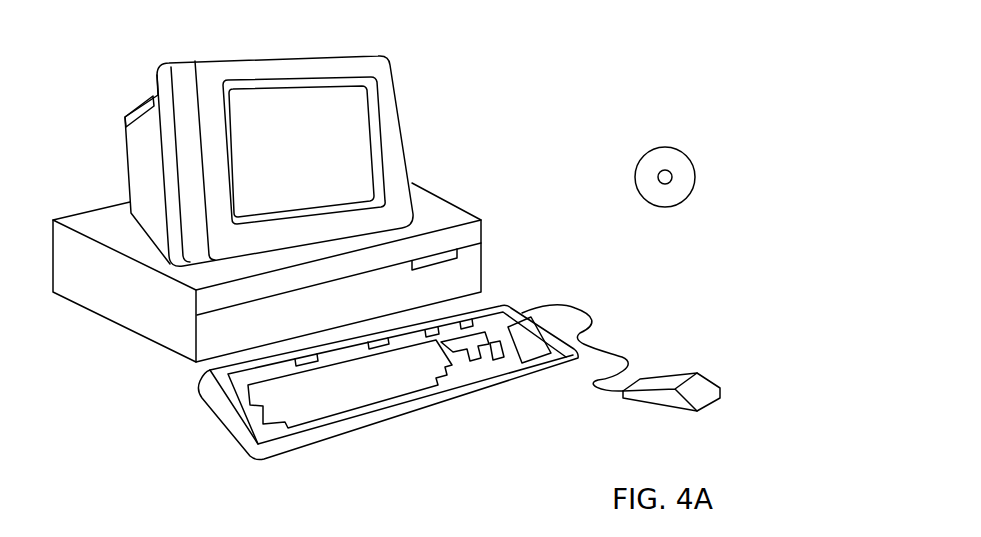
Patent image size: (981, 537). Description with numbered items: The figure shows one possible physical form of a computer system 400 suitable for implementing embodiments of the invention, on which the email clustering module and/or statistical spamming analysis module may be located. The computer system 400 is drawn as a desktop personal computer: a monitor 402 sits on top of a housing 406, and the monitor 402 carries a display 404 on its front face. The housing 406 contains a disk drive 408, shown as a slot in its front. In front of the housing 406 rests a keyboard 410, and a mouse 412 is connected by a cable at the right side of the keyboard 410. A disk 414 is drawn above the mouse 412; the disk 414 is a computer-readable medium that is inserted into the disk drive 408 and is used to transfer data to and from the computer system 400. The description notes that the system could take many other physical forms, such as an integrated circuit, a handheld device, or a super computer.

The computer system 400 is at (587, 38).
The monitor 402 is at (407, 160).
The display 404 is at (367, 115).
The housing 406 is at (150, 347).
The disk drive 408 is at (459, 251).
The keyboard 410 is at (380, 420).
The mouse 412 is at (710, 388).
The disk 414 is at (680, 148).